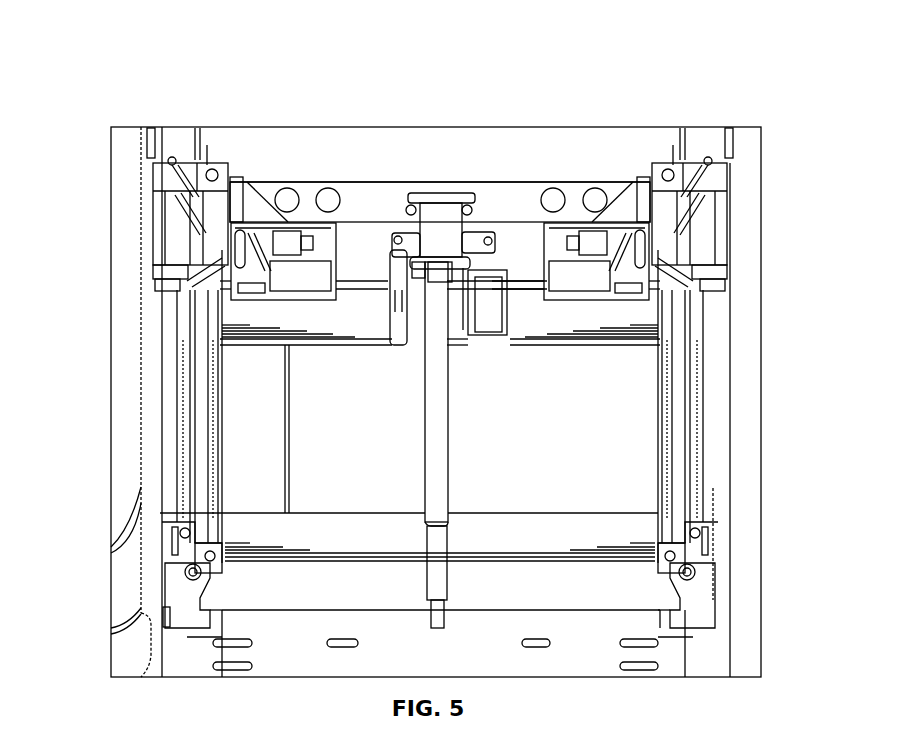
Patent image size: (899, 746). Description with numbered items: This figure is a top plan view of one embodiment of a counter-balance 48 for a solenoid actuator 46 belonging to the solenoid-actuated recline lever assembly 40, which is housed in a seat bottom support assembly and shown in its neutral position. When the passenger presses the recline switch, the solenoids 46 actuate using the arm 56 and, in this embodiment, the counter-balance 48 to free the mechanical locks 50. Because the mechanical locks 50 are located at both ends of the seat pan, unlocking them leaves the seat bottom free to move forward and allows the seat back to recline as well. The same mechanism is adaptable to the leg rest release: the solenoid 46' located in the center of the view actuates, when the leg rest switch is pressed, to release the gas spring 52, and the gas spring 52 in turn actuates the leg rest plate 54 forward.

The solenoid-actuated recline lever assembly 40 is at (528, 108).
The solenoid actuator 46 is at (440, 261).
The solenoid 46' is at (516, 346).
The counter-balance 48 is at (292, 232).
The mechanical lock 50 is at (215, 210).
The gas spring 52 is at (430, 480).
The leg rest plate 54 is at (560, 663).
The arm 56 is at (232, 252).